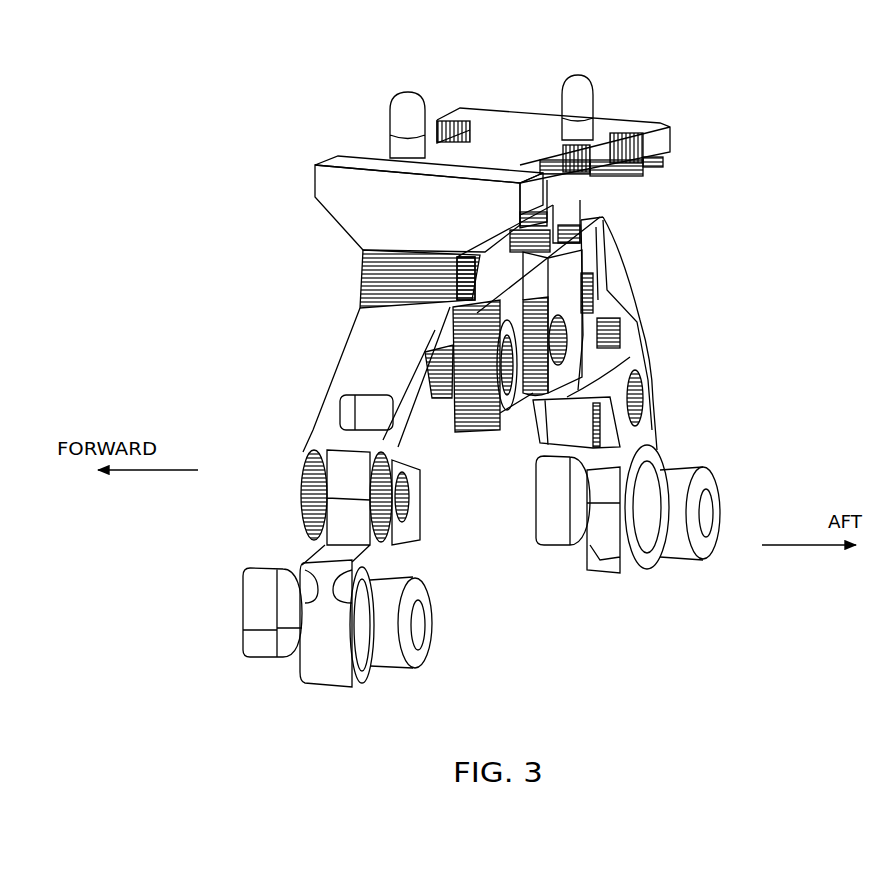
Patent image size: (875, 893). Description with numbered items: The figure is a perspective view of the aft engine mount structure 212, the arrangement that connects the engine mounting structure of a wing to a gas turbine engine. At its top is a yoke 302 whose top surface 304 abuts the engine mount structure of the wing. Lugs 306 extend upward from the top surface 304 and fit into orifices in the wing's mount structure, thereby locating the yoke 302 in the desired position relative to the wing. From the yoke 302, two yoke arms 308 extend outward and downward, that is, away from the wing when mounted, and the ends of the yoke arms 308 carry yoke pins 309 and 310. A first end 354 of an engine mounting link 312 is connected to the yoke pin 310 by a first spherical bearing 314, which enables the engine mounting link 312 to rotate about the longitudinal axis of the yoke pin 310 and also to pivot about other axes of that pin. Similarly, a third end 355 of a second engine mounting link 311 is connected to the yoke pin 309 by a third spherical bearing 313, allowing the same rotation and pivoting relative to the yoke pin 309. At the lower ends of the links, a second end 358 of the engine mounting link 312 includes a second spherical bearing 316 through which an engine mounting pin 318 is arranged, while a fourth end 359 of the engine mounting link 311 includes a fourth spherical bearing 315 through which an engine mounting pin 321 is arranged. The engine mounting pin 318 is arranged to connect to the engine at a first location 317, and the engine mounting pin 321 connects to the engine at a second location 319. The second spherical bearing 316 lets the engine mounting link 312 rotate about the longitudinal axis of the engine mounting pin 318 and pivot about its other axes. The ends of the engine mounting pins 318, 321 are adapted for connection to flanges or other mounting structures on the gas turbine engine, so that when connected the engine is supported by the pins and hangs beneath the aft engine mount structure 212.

The aft engine mount structure 212 is at (722, 104).
The yoke 302 is at (352, 232).
The top surface 304 is at (492, 133).
The lugs 306 is at (410, 95).
The yoke arms 308 is at (340, 380).
The yoke pin 309 is at (642, 392).
The yoke pin 310 is at (397, 490).
The engine mounting link 311 is at (655, 433).
The engine mounting link 312 is at (300, 540).
The third spherical bearing 313 is at (553, 427).
The first spherical bearing 314 is at (378, 455).
The fourth spherical bearing 315 is at (663, 553).
The second spherical bearing 316 is at (363, 657).
The first location 317 is at (262, 670).
The engine mounting pin 318 is at (400, 583).
The second location 319 is at (553, 556).
The engine mounting pin 321 is at (700, 470).
The first end 354 is at (353, 430).
The third end 355 is at (567, 407).
The second end 358 is at (333, 673).
The fourth end 359 is at (640, 573).